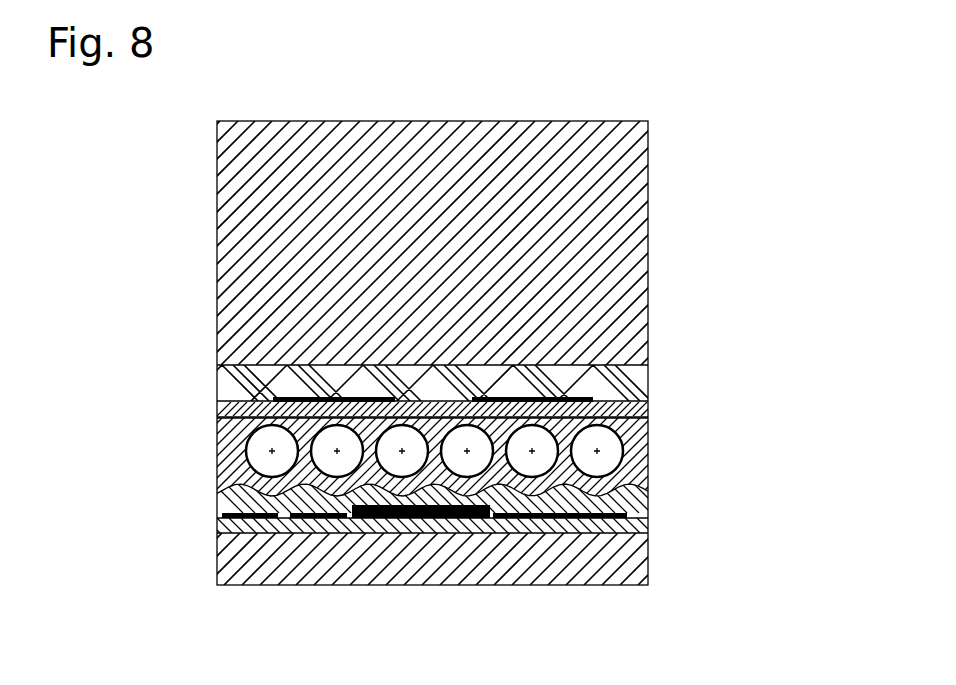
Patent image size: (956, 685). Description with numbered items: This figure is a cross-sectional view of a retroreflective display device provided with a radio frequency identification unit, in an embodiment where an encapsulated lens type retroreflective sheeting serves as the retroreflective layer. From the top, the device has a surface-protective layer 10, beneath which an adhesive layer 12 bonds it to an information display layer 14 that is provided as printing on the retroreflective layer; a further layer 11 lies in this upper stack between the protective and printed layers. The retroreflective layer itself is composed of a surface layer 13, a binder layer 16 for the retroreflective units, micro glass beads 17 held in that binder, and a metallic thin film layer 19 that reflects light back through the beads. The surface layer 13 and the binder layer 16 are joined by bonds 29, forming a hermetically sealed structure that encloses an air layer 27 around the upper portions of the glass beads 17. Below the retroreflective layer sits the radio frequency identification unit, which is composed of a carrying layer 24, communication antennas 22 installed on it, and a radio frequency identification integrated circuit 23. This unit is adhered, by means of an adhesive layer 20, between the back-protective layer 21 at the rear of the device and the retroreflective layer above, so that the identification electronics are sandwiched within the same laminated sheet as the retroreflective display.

The surface-protective layer 10 is at (442, 243).
The insulating layer 11 is at (518, 330).
The adhesive layer 12 is at (519, 357).
The surface layer 13 is at (518, 372).
The information display layer 14 is at (646, 301).
The binder layer 16 is at (485, 459).
The micro glass beads 17 is at (539, 462).
The metallic thin film layer 19 is at (525, 510).
The adhesive layer 20 is at (516, 555).
The back-protective layer 21 is at (501, 598).
The communication antennas 22 is at (400, 584).
The radio frequency identification integrated circuit 23 is at (539, 588).
The carrying layer 24 is at (298, 590).
The air layer 27 is at (526, 410).
The bonds 29 is at (547, 246).